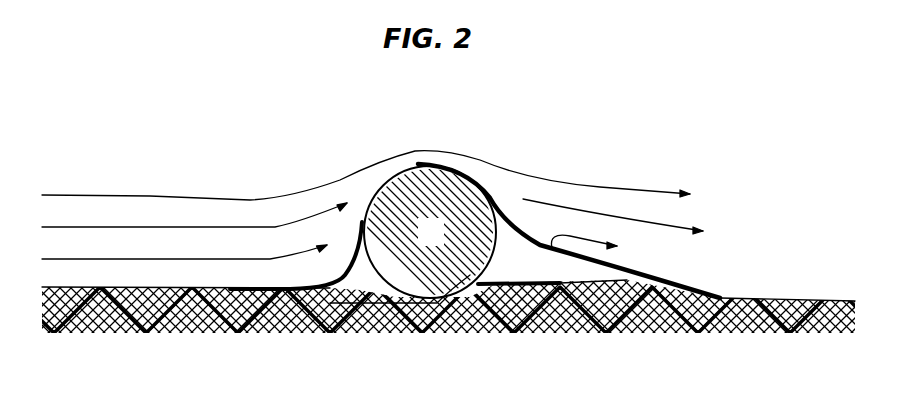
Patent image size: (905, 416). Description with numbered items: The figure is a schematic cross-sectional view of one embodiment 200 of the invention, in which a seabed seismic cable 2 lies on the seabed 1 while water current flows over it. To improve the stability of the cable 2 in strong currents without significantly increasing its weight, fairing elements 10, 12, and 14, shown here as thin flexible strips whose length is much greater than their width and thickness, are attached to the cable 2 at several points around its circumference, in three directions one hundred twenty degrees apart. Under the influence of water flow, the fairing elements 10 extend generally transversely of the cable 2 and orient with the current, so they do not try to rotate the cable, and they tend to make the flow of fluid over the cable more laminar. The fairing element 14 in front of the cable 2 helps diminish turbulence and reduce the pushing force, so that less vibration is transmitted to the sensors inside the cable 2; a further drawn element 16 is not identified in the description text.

The seabed 1 is at (785, 300).
The seabed seismic cable 2 is at (450, 230).
The embodiment of the invention 200 is at (516, 146).
The fairing element 10 is at (593, 270).
The fairing element 12 is at (493, 272).
The fairing element 14 is at (340, 283).
The meniscus 16 is at (440, 303).